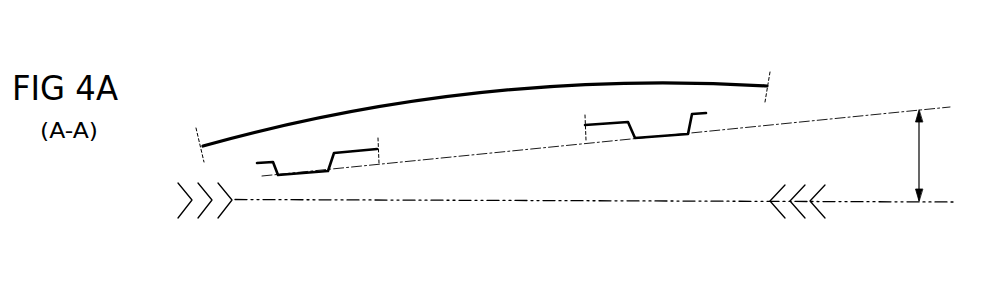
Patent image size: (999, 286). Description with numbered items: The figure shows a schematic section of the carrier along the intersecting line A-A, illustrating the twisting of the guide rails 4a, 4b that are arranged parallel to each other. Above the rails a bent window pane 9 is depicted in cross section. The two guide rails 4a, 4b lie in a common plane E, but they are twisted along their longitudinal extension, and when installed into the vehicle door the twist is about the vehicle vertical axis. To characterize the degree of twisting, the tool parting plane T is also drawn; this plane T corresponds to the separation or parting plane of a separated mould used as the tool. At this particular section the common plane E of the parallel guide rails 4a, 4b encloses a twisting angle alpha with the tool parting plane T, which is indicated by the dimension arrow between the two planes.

The window pane 9 is at (715, 84).
The guide rail 4a is at (313, 174).
The guide rail 4b is at (662, 138).
The common plane E is at (840, 117).
The tool parting plane T is at (733, 203).